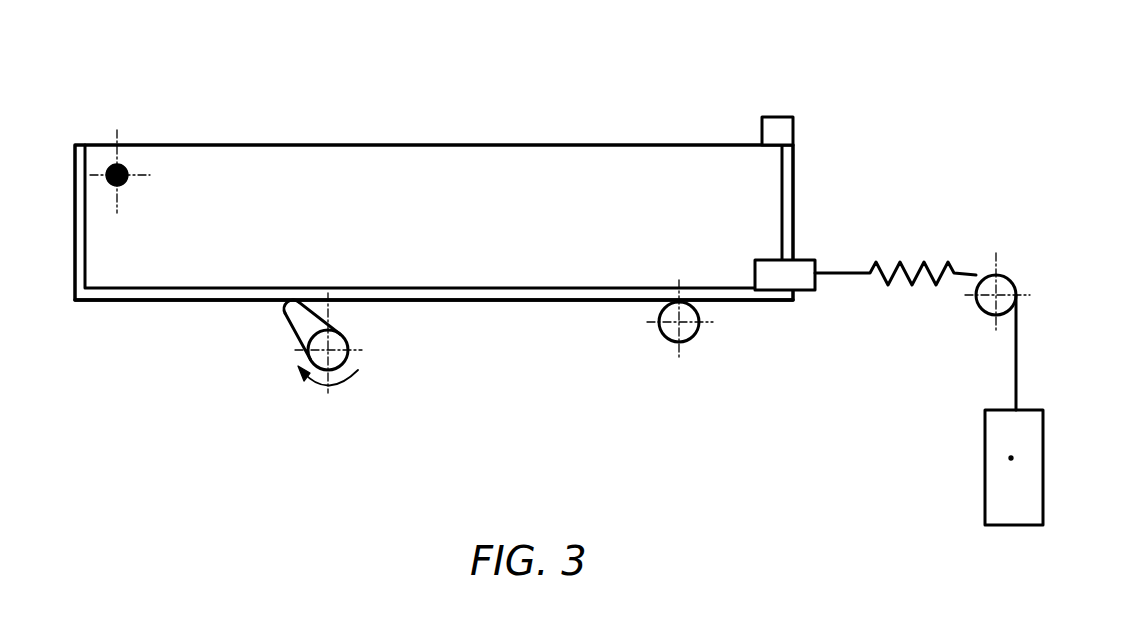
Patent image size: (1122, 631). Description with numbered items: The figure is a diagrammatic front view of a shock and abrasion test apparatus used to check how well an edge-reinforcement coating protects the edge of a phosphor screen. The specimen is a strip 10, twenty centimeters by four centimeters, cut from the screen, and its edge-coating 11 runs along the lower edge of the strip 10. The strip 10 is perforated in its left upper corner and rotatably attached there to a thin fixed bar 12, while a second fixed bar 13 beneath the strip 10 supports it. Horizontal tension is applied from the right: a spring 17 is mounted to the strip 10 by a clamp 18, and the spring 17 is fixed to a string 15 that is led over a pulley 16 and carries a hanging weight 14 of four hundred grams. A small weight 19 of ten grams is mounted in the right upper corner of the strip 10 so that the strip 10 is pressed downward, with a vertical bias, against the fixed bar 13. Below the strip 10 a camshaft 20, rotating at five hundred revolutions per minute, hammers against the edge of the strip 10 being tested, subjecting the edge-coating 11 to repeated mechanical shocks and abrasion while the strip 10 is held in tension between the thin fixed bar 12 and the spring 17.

The strip 10 is at (447, 137).
The edge-coating 11 is at (155, 297).
The thin fixed bar 12 is at (128, 165).
The fixed bar 13 is at (690, 336).
The weight 14 is at (1030, 458).
The string 15 is at (1017, 346).
The pulley 16 is at (1003, 280).
The spring 17 is at (902, 285).
The clamp 18 is at (797, 272).
The weight 19 is at (778, 125).
The camshaft 20 is at (345, 356).